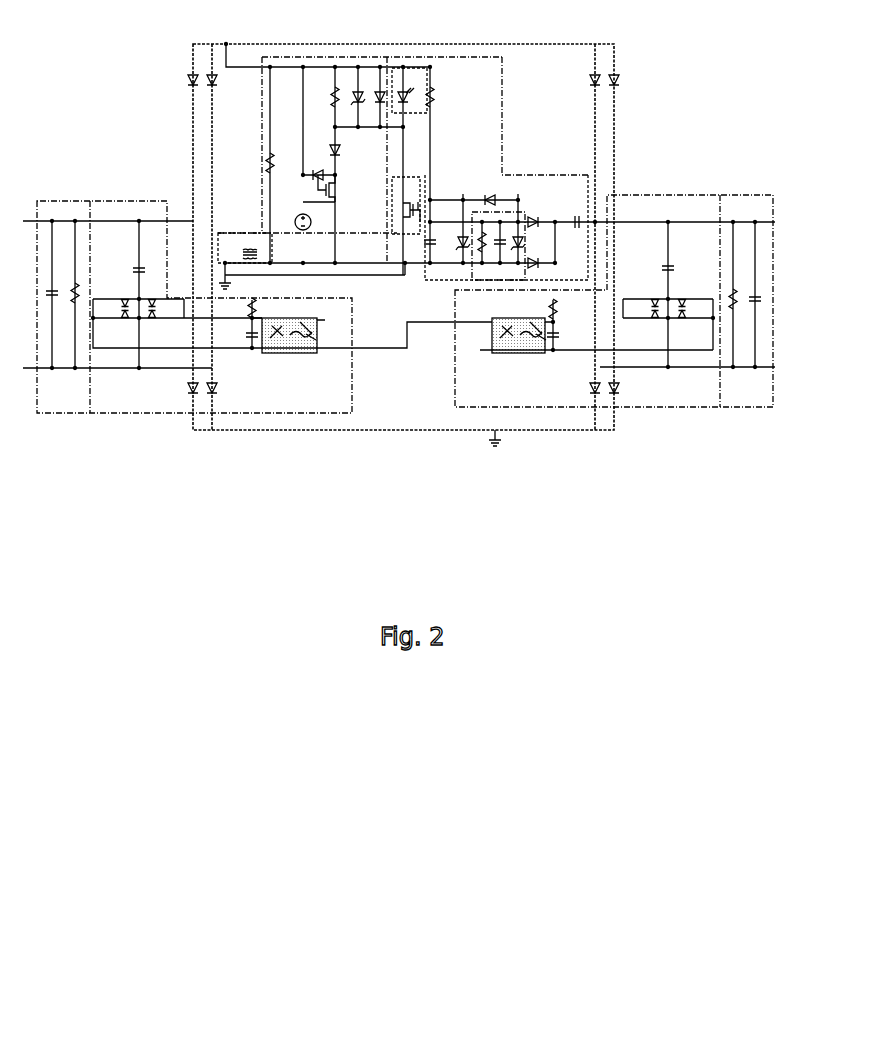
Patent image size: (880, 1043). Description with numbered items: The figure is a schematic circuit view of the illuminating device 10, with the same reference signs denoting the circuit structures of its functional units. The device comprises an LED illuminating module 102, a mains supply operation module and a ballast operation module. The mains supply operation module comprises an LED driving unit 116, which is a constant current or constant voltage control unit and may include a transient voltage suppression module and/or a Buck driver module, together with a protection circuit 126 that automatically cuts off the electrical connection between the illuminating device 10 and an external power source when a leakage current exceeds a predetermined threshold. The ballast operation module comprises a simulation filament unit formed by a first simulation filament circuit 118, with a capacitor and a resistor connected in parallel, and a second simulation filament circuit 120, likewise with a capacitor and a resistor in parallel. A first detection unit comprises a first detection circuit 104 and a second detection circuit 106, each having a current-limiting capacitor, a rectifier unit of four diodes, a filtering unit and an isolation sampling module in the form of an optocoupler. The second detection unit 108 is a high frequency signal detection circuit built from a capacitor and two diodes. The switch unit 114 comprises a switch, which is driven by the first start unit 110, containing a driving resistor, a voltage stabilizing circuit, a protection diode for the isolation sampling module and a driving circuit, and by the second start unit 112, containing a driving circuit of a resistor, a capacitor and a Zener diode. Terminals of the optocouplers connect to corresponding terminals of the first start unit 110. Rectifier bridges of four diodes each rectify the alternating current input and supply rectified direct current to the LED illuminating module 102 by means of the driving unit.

The illuminating device 10 is at (759, 54).
The LED illuminating module 102 is at (451, 56).
The first detection circuit 104 is at (145, 201).
The second detection circuit 106 is at (667, 195).
The second detection unit 108 is at (553, 177).
The first start unit 110 is at (502, 148).
The second start unit 112 is at (488, 280).
The switch unit 114 is at (407, 238).
The LED driving unit 116 is at (262, 138).
The first simulation filament circuit 118 is at (67, 201).
The second simulation filament circuit 120 is at (743, 195).
The protection circuit 126 is at (248, 232).